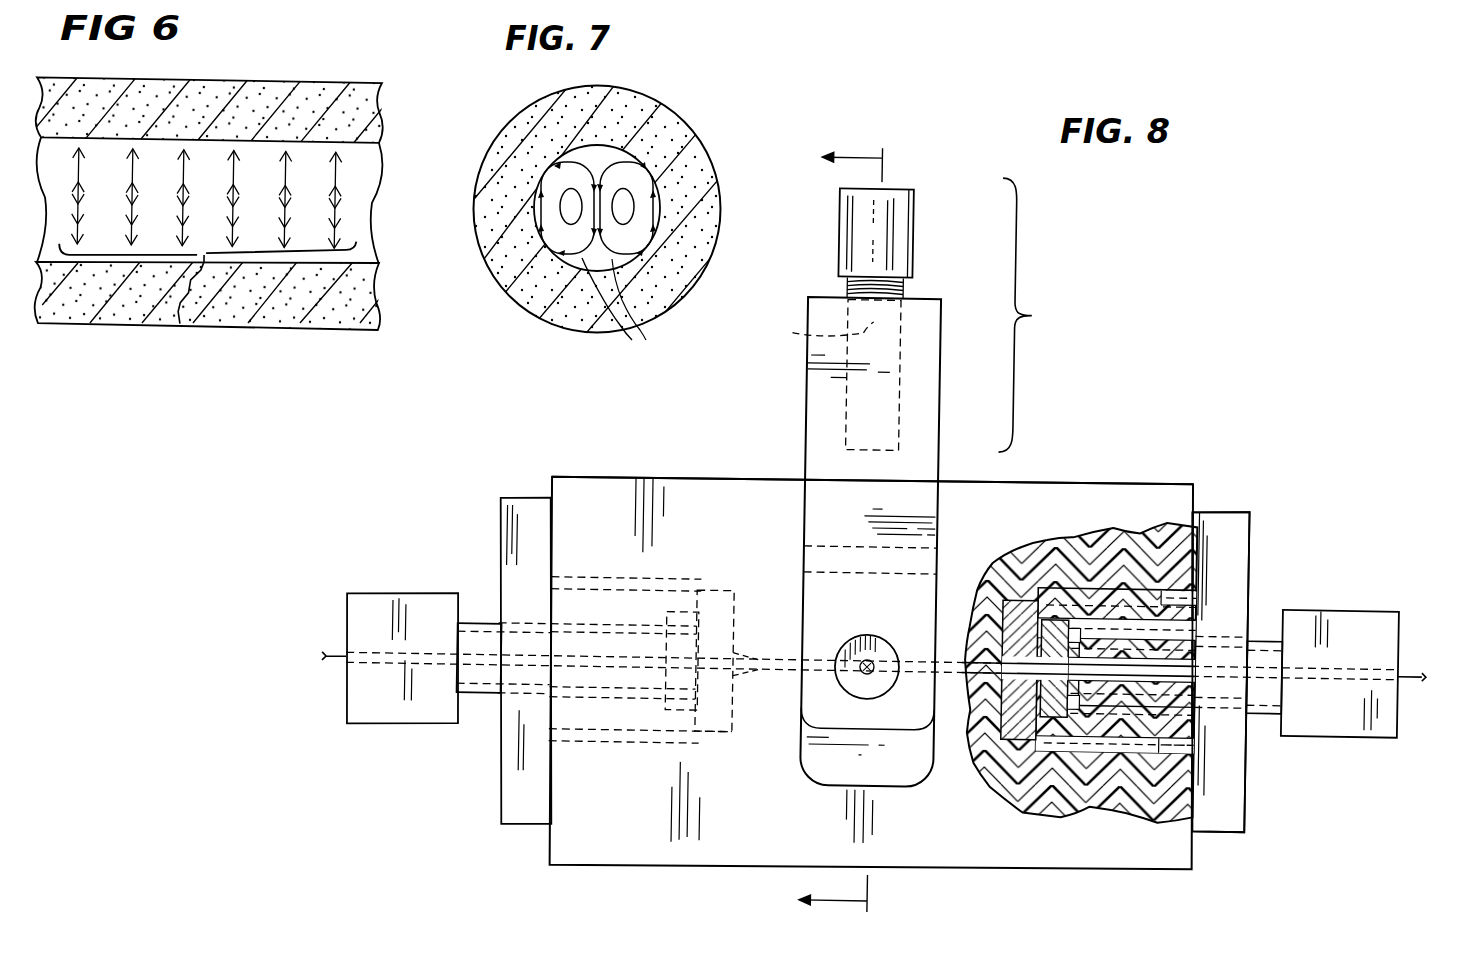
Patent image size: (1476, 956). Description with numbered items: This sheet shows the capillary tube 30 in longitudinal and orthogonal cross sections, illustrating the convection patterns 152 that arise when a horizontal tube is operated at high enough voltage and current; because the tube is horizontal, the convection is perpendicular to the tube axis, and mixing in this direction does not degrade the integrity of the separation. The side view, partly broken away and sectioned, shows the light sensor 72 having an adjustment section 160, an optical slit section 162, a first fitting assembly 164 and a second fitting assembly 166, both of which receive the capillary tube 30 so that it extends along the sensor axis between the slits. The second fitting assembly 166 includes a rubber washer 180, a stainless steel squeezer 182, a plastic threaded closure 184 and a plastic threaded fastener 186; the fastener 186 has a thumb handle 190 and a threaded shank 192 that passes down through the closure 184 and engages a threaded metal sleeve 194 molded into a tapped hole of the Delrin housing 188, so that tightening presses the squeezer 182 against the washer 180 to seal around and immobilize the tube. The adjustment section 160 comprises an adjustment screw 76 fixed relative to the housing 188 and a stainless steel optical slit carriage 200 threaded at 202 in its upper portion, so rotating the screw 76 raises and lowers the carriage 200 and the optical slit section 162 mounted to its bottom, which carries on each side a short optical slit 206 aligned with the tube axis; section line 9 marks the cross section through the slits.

In FIG. 6, the capillary tube 30 is at (293, 69).
In FIG. 7, the capillary tube 30 is at (701, 128).
In FIG. 8, the capillary tube 30 is at (337, 660).
In FIG. 6, the convection patterns 152 is at (182, 326).
In FIG. 7, the convection patterns 152 is at (634, 305).
In FIG. 8, the section line 9— 9 is at (827, 530).
In FIG. 8, the sensor 72 is at (570, 450).
In FIG. 8, the adjustment screw 76 is at (900, 245).
In FIG. 8, the adjustment section 160 is at (1035, 315).
In FIG. 8, the optical slit section 162 is at (797, 655).
In FIG. 8, the first fitting assembly 164 is at (421, 594).
In FIG. 8, the second fitting assembly 166 is at (1251, 607).
In FIG. 8, the rubber washer 180 is at (998, 563).
In FIG. 8, the stainless steel squeezer 182 is at (1057, 622).
In FIG. 8, the plastic threaded closure 184 is at (1229, 584).
In FIG. 8, the plastic threaded fastener 186 is at (1359, 622).
In FIG. 8, the housing 188 is at (744, 502).
In FIG. 8, the thumb handle 190 is at (1336, 712).
In FIG. 8, the threaded shank 192 is at (1258, 639).
In FIG. 8, the threaded metal sleeve 194 is at (1154, 630).
In FIG. 8, the optical slit carriage 200 is at (796, 409).
In FIG. 8, the internal threads 202 is at (811, 333).
In FIG. 8, the optical slit 206 is at (873, 655).